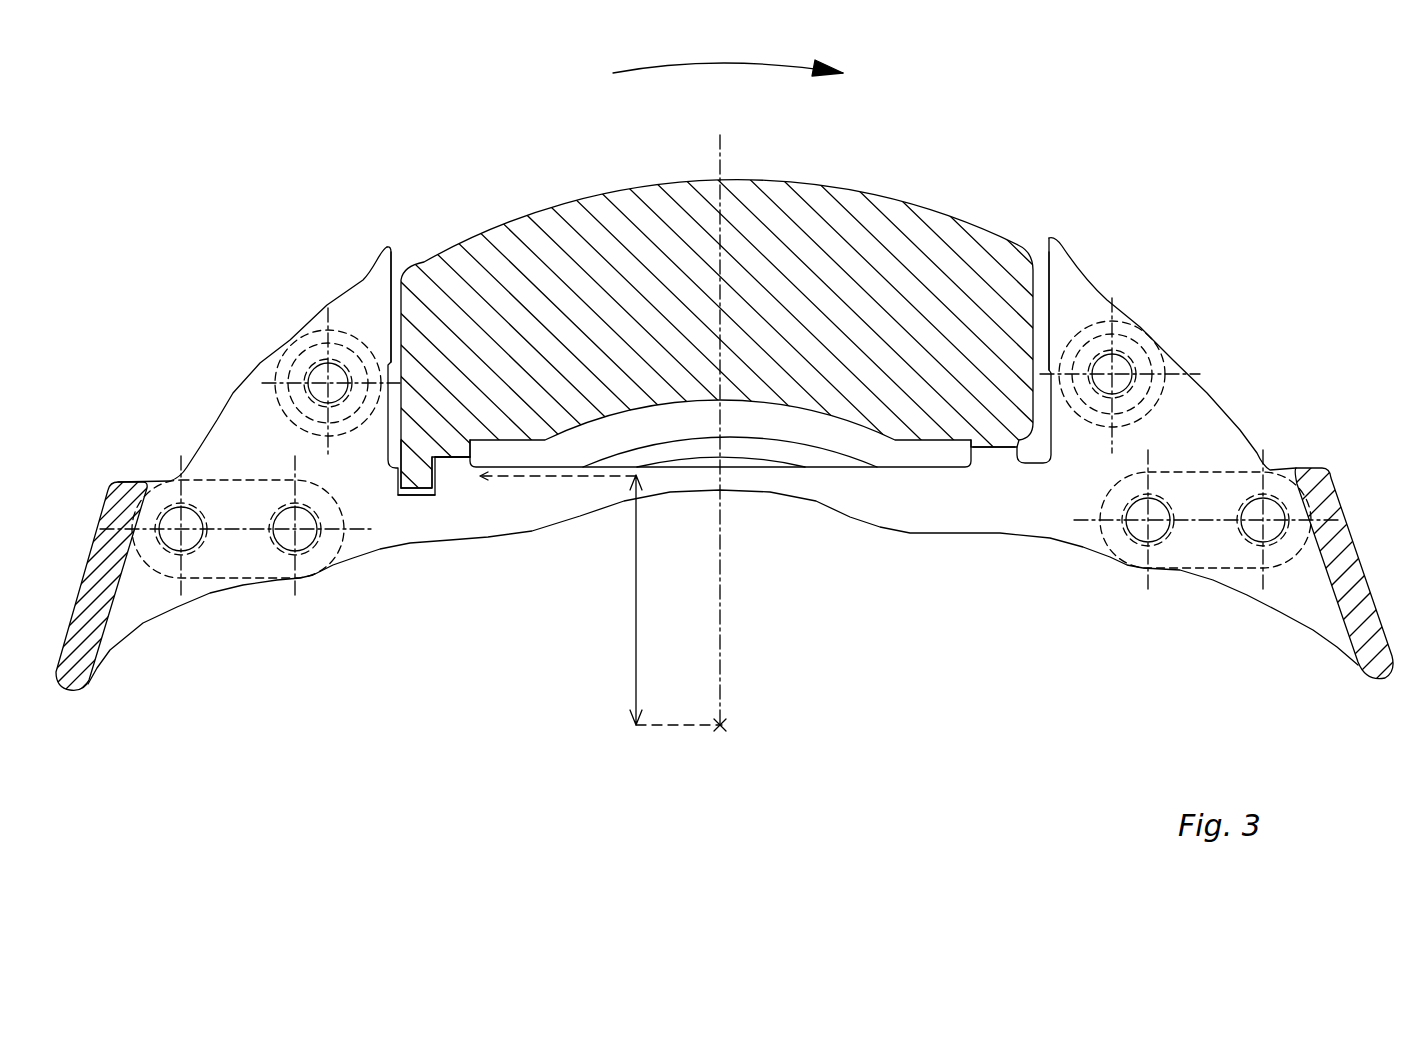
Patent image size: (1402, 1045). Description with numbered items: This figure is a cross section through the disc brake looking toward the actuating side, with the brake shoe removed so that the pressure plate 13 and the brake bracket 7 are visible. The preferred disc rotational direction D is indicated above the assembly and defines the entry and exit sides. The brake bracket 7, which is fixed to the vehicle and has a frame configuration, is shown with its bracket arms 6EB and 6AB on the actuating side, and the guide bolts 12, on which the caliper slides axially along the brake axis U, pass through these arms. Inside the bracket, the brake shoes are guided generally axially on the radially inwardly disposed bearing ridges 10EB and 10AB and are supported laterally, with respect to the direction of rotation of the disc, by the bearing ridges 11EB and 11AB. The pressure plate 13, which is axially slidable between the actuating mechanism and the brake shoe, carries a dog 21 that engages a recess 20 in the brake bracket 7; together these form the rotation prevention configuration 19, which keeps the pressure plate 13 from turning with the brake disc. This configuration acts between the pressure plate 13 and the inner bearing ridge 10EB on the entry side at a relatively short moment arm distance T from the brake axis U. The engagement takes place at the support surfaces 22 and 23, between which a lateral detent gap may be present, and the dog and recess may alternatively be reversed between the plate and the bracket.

The pressure plate 13 is at (848, 265).
The rotation prevention configuration 19 is at (428, 429).
The bracket arm 6EB is at (290, 452).
The bracket arm 6AB is at (1212, 433).
The brake bracket 7 is at (1328, 502).
The bolts 12 is at (307, 356).
The bearing ridge 11EB is at (404, 275).
The bearing ridge 11AB is at (1043, 235).
The dog 21 is at (419, 460).
The support surface 23 is at (434, 475).
The recess 20 is at (414, 514).
The support surface 22 is at (451, 492).
The bearing ridge 10EB is at (467, 479).
The bearing ridge 10AB is at (1003, 468).
The moment arm distance T is at (676, 600).
The brake axis U is at (730, 725).
The disc rotational direction D is at (728, 54).